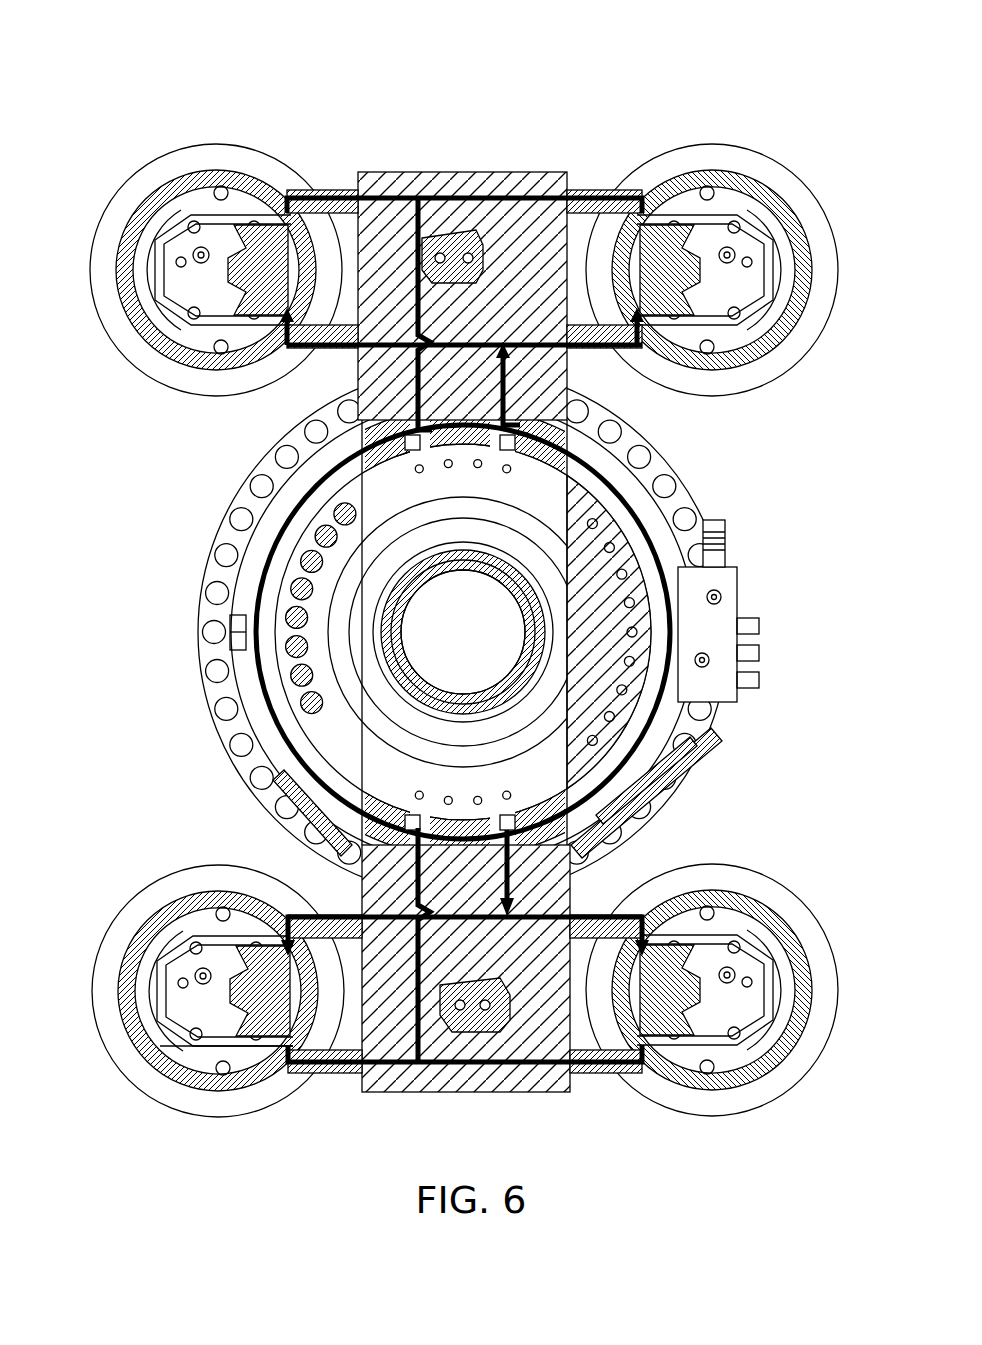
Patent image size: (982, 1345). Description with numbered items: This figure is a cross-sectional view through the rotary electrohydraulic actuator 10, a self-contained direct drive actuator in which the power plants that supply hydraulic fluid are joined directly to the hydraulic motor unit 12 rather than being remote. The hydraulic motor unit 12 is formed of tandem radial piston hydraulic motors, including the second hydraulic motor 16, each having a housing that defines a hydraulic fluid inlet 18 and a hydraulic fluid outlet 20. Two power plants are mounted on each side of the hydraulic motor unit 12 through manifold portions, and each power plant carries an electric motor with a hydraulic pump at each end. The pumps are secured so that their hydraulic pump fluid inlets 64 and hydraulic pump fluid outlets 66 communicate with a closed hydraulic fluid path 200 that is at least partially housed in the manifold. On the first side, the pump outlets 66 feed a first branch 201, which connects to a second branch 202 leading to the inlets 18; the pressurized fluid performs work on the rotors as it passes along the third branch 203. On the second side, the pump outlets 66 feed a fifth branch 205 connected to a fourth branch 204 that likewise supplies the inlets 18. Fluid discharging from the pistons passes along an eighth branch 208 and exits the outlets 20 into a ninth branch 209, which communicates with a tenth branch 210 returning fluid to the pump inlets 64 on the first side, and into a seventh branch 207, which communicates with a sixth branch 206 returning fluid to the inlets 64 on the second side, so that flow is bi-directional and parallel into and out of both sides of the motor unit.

The rotary electrohydraulic actuator 10 is at (232, 40).
The hydraulic motor unit 12 is at (680, 482).
The second hydraulic motor 16 is at (476, 632).
The hydraulic fluid inlet 18 is at (413, 450).
The hydraulic fluid outlet 20 is at (500, 450).
The hydraulic pump fluid inlet 64 is at (318, 348).
The hydraulic pump fluid outlet 66 is at (240, 247).
The hydraulic fluid path 200 is at (212, 583).
The first branch 201 is at (388, 1065).
The second branch 202 is at (470, 1040).
The third branch 203 is at (283, 528).
The fourth branch 204 is at (437, 230).
The fifth branch 205 is at (337, 196).
The sixth branch 206 is at (355, 405).
The seventh branch 207 is at (545, 390).
The eighth branch 208 is at (688, 590).
The ninth branch 209 is at (508, 877).
The tenth branch 210 is at (660, 863).